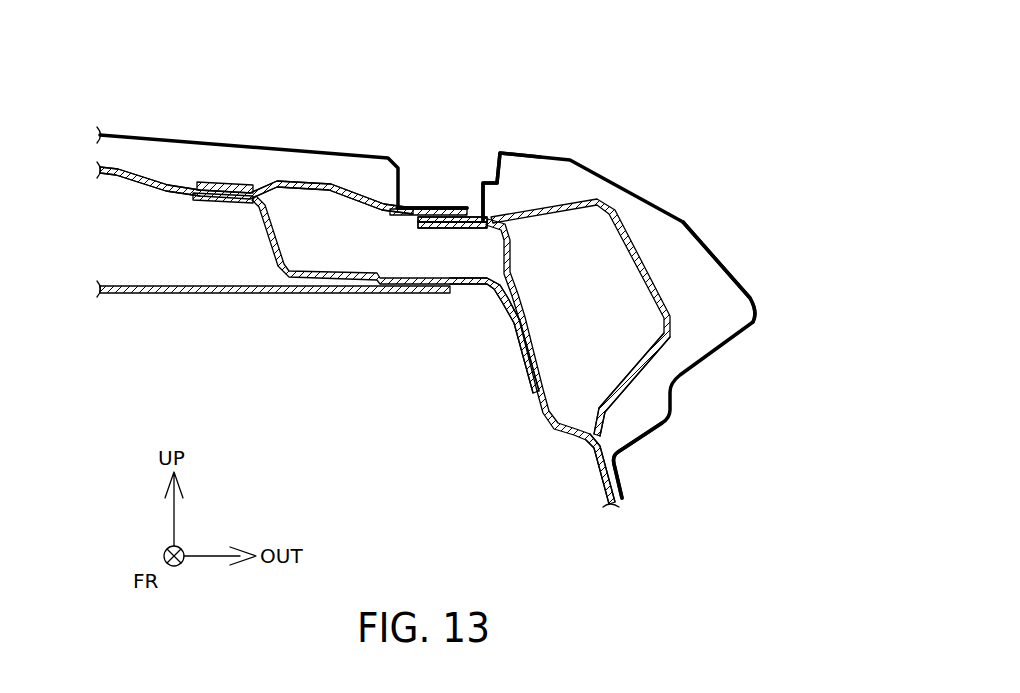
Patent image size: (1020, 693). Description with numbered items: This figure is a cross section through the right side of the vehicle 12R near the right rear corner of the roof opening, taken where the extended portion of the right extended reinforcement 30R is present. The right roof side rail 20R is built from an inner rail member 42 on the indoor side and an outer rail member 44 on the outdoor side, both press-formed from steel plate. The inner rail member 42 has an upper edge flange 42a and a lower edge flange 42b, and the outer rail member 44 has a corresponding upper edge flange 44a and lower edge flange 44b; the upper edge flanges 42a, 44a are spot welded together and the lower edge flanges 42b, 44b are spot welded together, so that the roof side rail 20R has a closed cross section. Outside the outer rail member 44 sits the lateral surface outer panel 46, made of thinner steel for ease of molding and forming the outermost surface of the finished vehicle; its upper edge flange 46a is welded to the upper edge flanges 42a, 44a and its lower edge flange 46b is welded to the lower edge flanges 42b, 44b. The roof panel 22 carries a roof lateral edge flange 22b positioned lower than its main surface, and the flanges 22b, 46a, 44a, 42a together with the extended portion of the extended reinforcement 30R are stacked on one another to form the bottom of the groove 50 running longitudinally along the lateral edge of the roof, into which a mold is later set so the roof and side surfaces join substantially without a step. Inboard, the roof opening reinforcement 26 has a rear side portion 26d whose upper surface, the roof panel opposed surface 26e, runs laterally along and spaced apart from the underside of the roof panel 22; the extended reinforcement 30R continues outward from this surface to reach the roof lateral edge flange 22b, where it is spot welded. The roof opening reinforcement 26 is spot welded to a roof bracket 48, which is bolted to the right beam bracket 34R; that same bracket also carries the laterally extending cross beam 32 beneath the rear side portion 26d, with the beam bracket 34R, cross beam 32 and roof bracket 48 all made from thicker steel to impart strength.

The right side of vehicle 12R is at (742, 227).
The right roof side rail 20R is at (558, 197).
The roof panel 22 is at (182, 141).
The roof lateral edge flange 22b is at (432, 207).
The roof opening reinforcement 26 is at (138, 160).
The rear side portion 26d is at (138, 160).
The roof panel opposed surface 26e is at (172, 182).
The right extended reinforcement 30R is at (320, 182).
The cross beam 32 is at (190, 297).
The right beam bracket 34R is at (488, 307).
The inner rail member 42 is at (548, 418).
The upper edge flange of inner rail member 42a is at (440, 228).
The lower edge flange of inner rail member 42b is at (592, 463).
The outer rail member 44 is at (623, 230).
The upper edge flange of outer rail member 44a is at (417, 221).
The lower edge flange of outer rail member 44b is at (600, 430).
The lateral surface outer panel 46 is at (752, 297).
The upper edge flange of lateral surface outer panel 46a is at (474, 212).
The lower edge flange of lateral surface outer panel 46b is at (618, 480).
The roof bracket 48 is at (260, 232).
The groove 50 is at (445, 172).